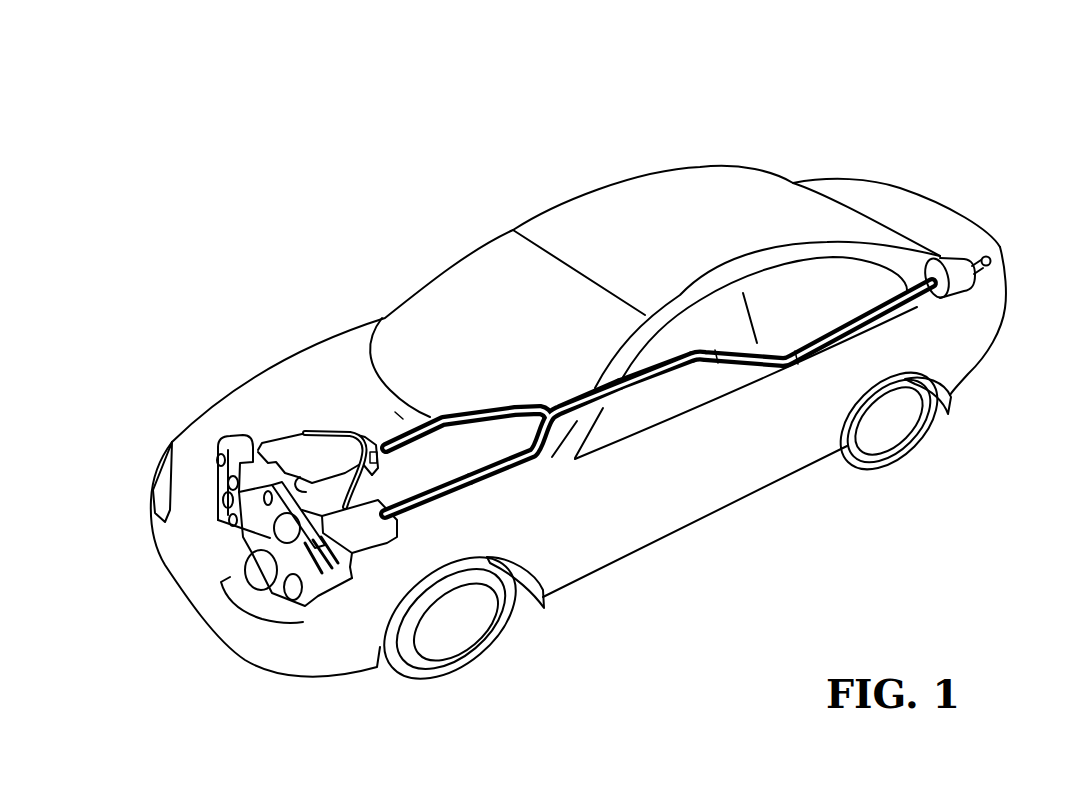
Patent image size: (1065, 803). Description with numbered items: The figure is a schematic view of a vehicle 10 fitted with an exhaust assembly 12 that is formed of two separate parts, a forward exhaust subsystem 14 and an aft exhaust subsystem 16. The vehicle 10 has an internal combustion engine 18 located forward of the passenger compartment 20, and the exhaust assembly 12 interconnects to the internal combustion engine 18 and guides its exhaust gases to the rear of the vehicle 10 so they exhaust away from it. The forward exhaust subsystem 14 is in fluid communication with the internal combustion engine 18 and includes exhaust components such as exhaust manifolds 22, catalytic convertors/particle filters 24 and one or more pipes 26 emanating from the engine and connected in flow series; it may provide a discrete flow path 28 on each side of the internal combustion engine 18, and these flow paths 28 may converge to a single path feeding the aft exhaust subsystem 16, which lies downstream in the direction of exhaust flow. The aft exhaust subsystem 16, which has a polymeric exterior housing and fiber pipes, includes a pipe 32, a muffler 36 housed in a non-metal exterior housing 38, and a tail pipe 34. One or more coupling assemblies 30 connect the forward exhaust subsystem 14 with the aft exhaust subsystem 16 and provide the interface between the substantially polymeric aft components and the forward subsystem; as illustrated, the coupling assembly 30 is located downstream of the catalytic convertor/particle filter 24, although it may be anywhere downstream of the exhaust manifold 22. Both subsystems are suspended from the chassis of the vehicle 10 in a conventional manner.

The vehicle 10 is at (578, 374).
The exhaust assembly 12 is at (722, 440).
The forward exhaust subsystem 14 is at (283, 516).
The aft exhaust subsystem 16 is at (989, 266).
The internal combustion engine 18 is at (257, 515).
The passenger compartment 20 is at (460, 324).
The exhaust manifold 22 is at (390, 487).
The catalytic convertor/particle filter 24 is at (413, 525).
The pipe 26 is at (363, 420).
The flow path 28 is at (400, 420).
The coupling assembly 30 is at (480, 491).
The pipe 32 is at (772, 368).
The tail pipe 34 is at (991, 263).
The muffler 36 is at (955, 267).
The exterior housing 38 is at (707, 337).